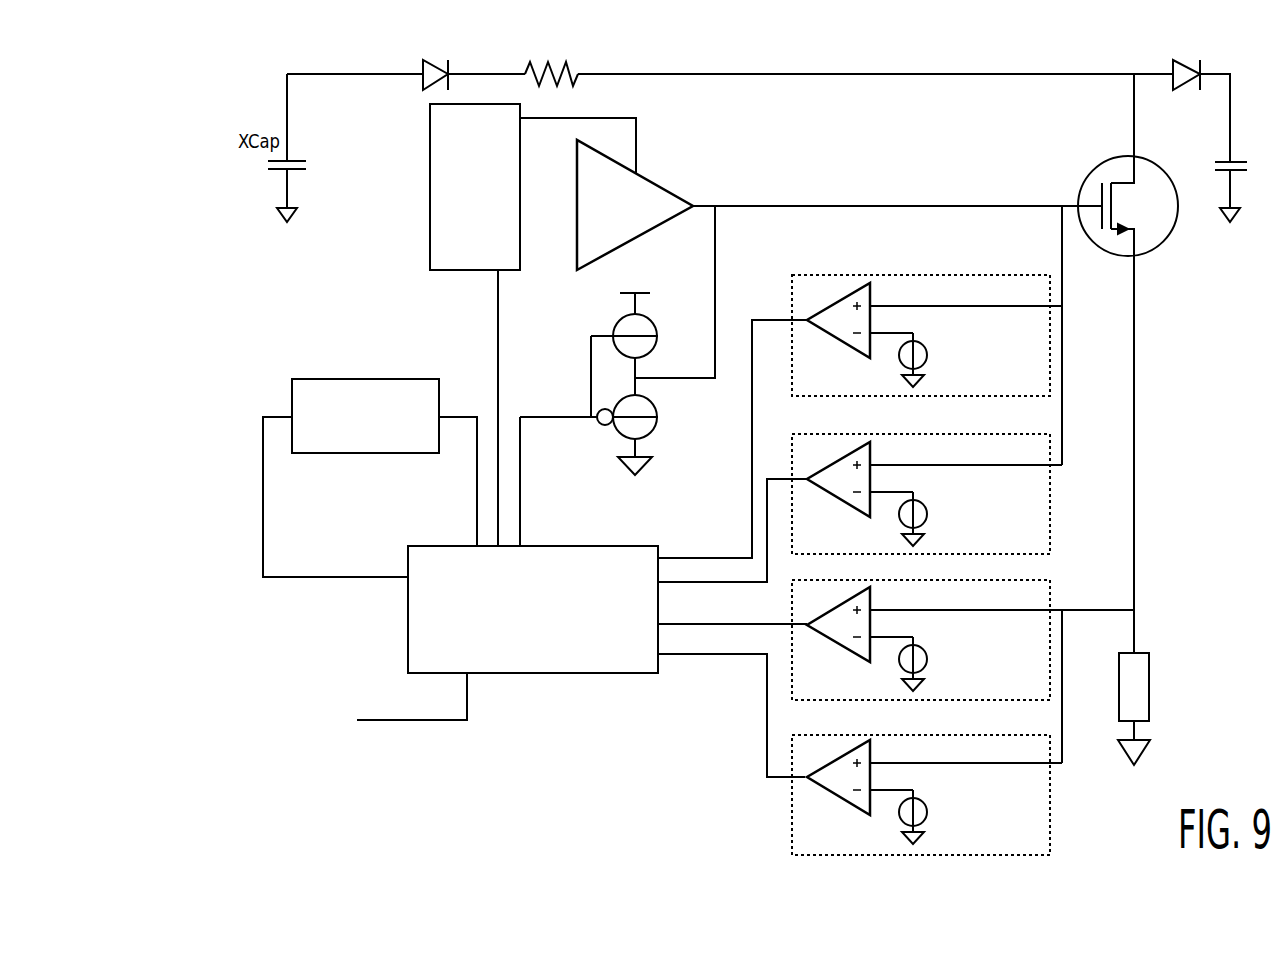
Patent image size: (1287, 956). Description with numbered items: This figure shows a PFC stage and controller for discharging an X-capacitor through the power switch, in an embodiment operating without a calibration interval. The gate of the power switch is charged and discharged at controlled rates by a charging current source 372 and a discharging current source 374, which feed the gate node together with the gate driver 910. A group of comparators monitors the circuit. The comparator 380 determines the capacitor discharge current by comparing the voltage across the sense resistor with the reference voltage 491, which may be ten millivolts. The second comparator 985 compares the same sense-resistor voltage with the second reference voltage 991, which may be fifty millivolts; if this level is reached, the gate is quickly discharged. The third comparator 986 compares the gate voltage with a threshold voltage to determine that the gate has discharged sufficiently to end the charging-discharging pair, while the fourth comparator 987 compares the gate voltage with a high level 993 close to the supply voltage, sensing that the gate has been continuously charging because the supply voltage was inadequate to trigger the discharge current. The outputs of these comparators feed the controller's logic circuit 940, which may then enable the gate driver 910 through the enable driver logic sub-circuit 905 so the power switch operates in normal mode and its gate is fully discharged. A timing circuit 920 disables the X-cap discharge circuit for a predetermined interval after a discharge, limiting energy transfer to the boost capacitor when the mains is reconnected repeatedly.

The enable driver logic sub-circuit 905 is at (430, 163).
The gate driver 910 is at (658, 182).
The timing circuit 920 is at (378, 379).
The logic circuit 940 is at (408, 650).
The charging current source 372 is at (613, 332).
The discharging current source 374 is at (615, 432).
The fourth comparator 987 is at (822, 305).
The third comparator 986 is at (822, 490).
The comparator 380 is at (822, 636).
The second comparator 985 is at (828, 790).
The high level 993 is at (971, 439).
The reference voltage 491 is at (944, 666).
The second reference voltage 991 is at (944, 818).